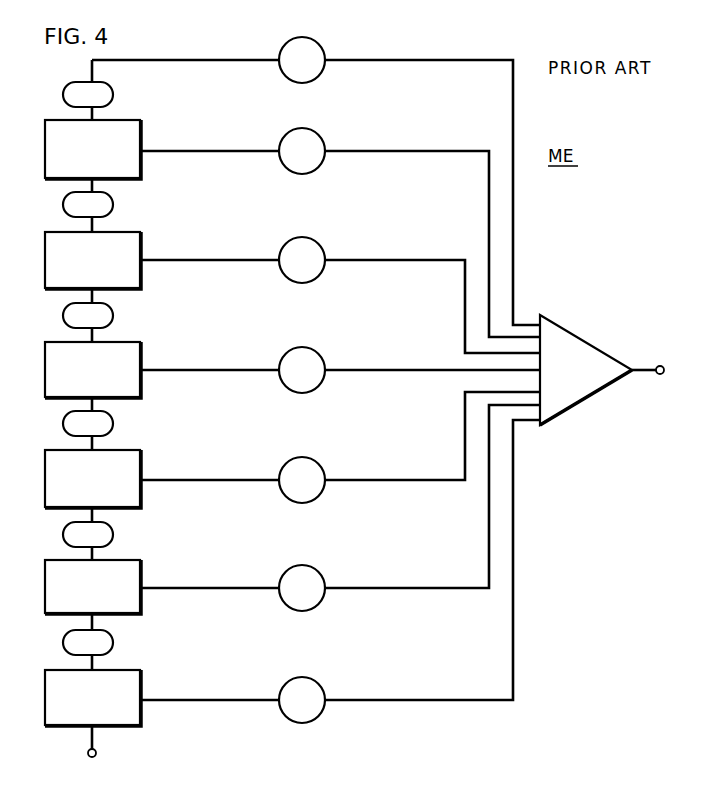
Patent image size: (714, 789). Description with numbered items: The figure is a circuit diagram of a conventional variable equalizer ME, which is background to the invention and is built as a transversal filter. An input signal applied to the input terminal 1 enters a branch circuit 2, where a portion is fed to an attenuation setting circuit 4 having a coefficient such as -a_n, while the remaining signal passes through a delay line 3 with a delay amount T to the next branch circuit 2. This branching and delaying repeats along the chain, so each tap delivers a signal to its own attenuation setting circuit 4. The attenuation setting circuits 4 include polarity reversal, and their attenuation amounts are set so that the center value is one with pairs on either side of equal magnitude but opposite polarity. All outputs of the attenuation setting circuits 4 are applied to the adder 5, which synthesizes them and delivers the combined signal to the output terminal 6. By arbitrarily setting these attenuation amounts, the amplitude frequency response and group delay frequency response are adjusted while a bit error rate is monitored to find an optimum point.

The input terminal 1 is at (96, 755).
The branch circuit 2 is at (141, 122).
The delay line 3 is at (113, 94).
The attenuation setting circuit 4 is at (320, 74).
The adder 5 is at (589, 338).
The output terminal 6 is at (662, 366).